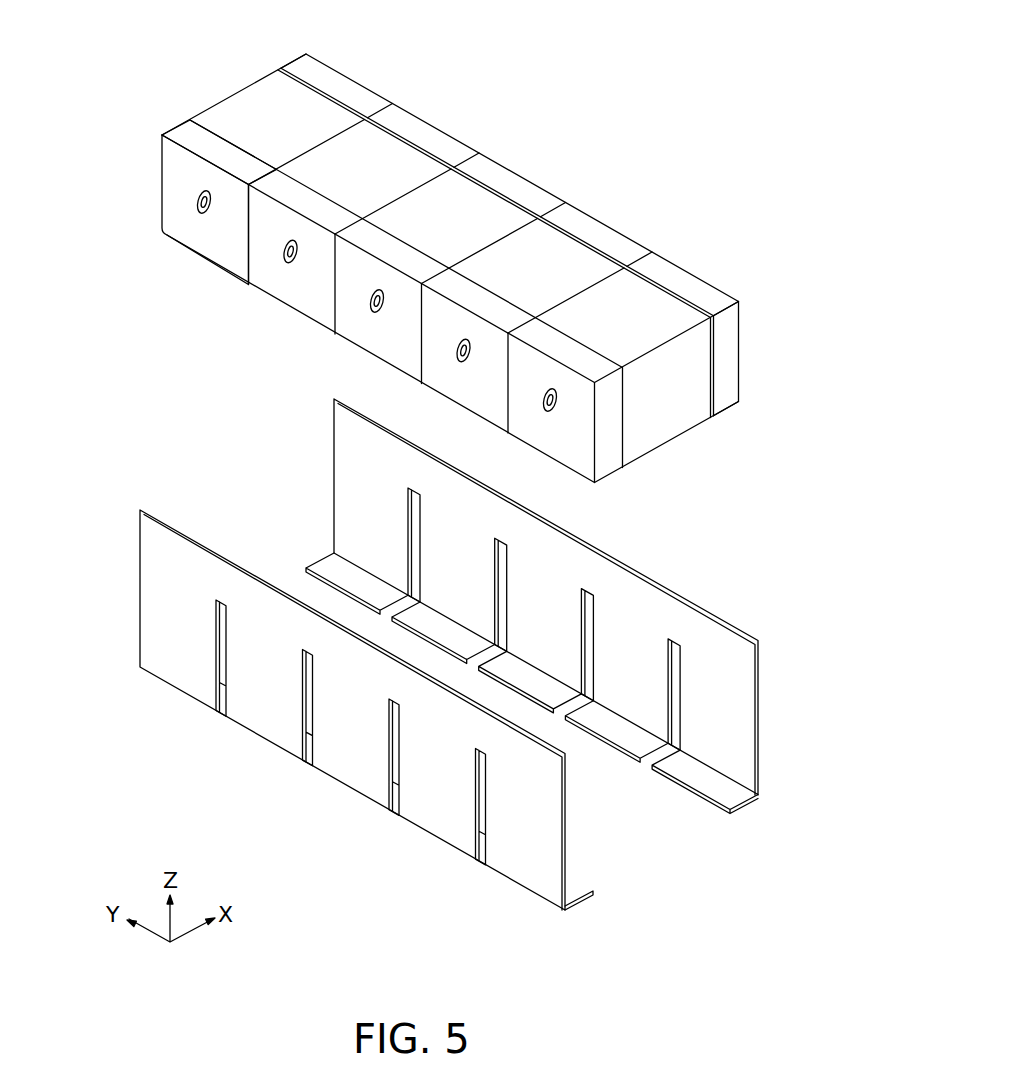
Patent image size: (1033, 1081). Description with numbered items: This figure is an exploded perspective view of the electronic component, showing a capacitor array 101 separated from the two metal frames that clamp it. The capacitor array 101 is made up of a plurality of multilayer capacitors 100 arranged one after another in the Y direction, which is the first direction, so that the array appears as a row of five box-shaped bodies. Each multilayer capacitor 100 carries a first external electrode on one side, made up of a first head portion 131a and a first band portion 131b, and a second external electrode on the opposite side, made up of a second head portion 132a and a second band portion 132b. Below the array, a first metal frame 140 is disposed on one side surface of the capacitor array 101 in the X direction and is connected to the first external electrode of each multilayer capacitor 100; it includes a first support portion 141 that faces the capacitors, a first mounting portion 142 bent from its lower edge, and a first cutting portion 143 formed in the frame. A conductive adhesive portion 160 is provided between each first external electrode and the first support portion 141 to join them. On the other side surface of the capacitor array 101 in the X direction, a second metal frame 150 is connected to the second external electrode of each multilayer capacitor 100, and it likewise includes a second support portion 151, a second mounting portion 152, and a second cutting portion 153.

The multilayer capacitor 100 is at (405, 241).
The capacitor array 101 is at (174, 162).
The first head portion 131a is at (205, 210).
The first band portion 131b is at (214, 100).
The second head portion 132a is at (345, 72).
The second band portion 132b is at (300, 62).
The conductive adhesive portion 160 is at (200, 211).
The first metal frame 140 is at (393, 737).
The first support portion 141 is at (532, 817).
The first mounting portion 142 is at (562, 884).
The first cutting portion 143 is at (475, 818).
The second metal frame 150 is at (571, 642).
The second support portion 151 is at (729, 718).
The second mounting portion 152 is at (765, 788).
The second cutting portion 153 is at (666, 648).